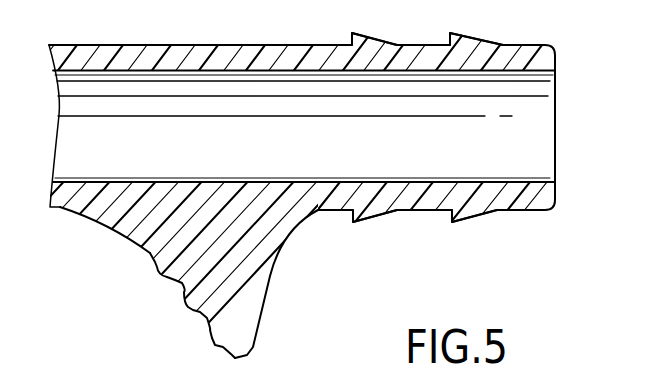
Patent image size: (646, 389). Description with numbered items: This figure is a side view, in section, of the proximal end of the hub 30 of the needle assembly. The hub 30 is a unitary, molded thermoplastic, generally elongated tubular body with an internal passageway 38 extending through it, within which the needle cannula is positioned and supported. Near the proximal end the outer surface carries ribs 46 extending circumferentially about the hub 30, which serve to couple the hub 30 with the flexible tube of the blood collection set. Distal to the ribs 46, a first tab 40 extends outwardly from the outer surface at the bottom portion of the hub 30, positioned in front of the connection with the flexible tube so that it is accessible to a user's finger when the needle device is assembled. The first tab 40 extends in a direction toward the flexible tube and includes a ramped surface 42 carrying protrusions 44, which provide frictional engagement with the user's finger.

The hub 30 is at (165, 48).
The internal passageway 38 is at (547, 117).
The first tab 40 is at (243, 355).
The ramped surface 42 is at (122, 235).
The protrusions 44 is at (180, 305).
The ribs 46 is at (353, 222).